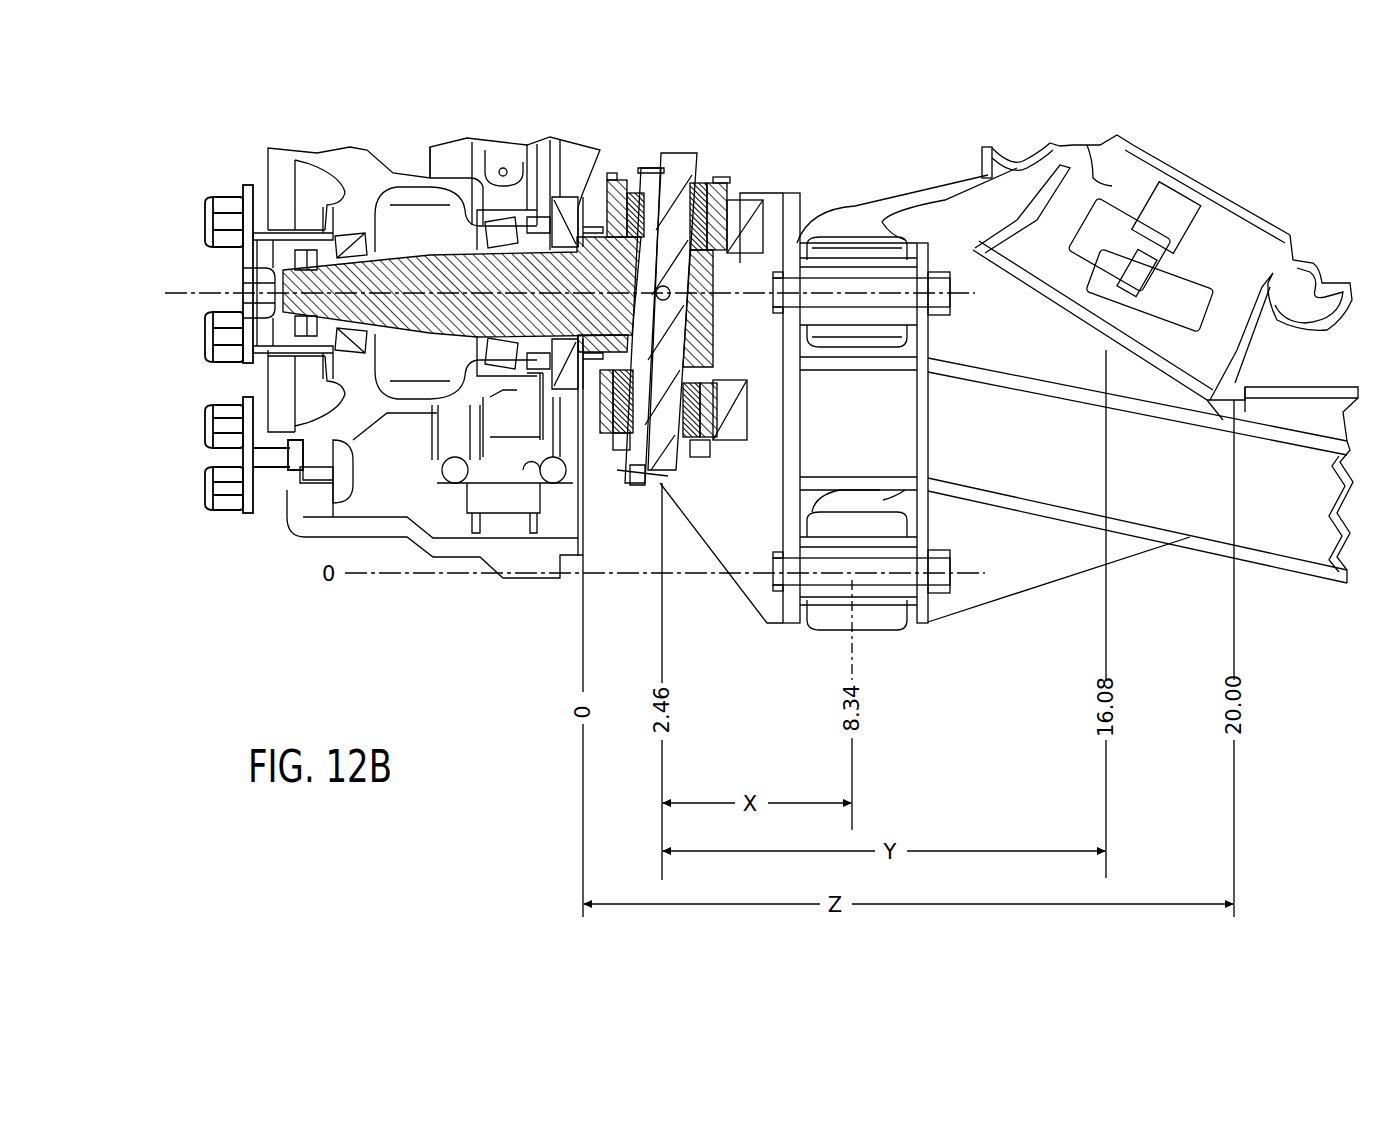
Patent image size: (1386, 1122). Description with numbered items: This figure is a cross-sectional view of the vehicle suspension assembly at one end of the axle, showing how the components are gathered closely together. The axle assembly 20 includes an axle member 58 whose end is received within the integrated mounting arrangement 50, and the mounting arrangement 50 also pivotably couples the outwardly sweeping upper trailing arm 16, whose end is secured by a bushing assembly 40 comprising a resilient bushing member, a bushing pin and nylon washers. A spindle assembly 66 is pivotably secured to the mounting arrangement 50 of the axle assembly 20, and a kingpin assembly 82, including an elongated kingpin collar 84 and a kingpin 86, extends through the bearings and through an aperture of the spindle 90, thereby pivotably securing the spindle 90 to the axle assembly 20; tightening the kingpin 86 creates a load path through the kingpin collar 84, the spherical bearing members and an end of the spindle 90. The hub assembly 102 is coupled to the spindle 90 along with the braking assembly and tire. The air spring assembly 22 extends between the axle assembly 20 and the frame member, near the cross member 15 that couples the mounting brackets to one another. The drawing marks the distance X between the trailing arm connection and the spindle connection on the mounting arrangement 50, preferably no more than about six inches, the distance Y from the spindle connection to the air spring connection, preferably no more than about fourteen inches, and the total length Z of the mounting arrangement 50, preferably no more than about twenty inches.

The cross member 15 is at (1312, 387).
The upper trailing arm 16 is at (927, 190).
The axle assembly 20 is at (1290, 578).
The air spring assembly 22 is at (1220, 183).
The bushing assembly 40 is at (852, 238).
The mounting arrangement 50 is at (791, 185).
The axle member 58 is at (1190, 540).
The spindle assembly 66 is at (593, 130).
The kingpin assembly 82 is at (703, 177).
The kingpin collar 84 is at (647, 168).
The kingpin 86 is at (687, 155).
The spindle 90 is at (417, 250).
The hub assembly 102 is at (287, 527).